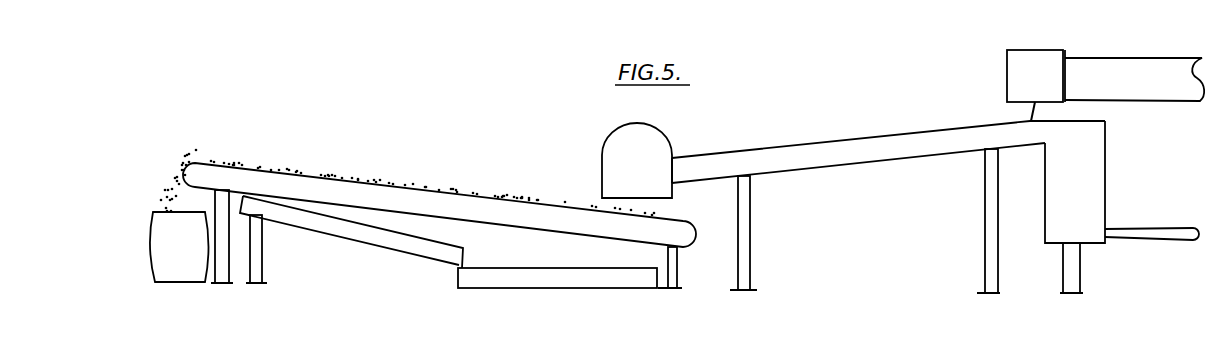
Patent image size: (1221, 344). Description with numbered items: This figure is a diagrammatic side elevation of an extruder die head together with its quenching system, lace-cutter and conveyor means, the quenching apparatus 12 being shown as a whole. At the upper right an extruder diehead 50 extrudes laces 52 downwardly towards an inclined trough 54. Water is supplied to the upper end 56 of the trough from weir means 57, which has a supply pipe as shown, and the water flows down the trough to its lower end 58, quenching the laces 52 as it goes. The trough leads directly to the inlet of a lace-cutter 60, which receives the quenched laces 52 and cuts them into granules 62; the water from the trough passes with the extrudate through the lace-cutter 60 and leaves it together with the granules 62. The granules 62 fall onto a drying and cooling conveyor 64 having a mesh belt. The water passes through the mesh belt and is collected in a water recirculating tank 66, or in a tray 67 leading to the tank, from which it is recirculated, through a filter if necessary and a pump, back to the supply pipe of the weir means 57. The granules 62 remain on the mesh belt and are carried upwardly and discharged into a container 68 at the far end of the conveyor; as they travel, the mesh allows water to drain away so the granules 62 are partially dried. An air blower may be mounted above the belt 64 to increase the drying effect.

The inclined conveyor 12 is at (825, 143).
The extruder diehead 50 is at (1022, 70).
The laces 52 is at (1030, 113).
The inclined trough 54 is at (890, 157).
The upper end 56 is at (1038, 150).
The weir means 57 is at (1090, 190).
The lower end 58 is at (697, 153).
The lace-cutter 60 is at (642, 138).
The granules 62 is at (655, 212).
The drying and cooling conveyor 64 is at (388, 197).
The water recirculating tank 66 is at (575, 275).
The tray 67 is at (357, 230).
The container 68 is at (192, 263).